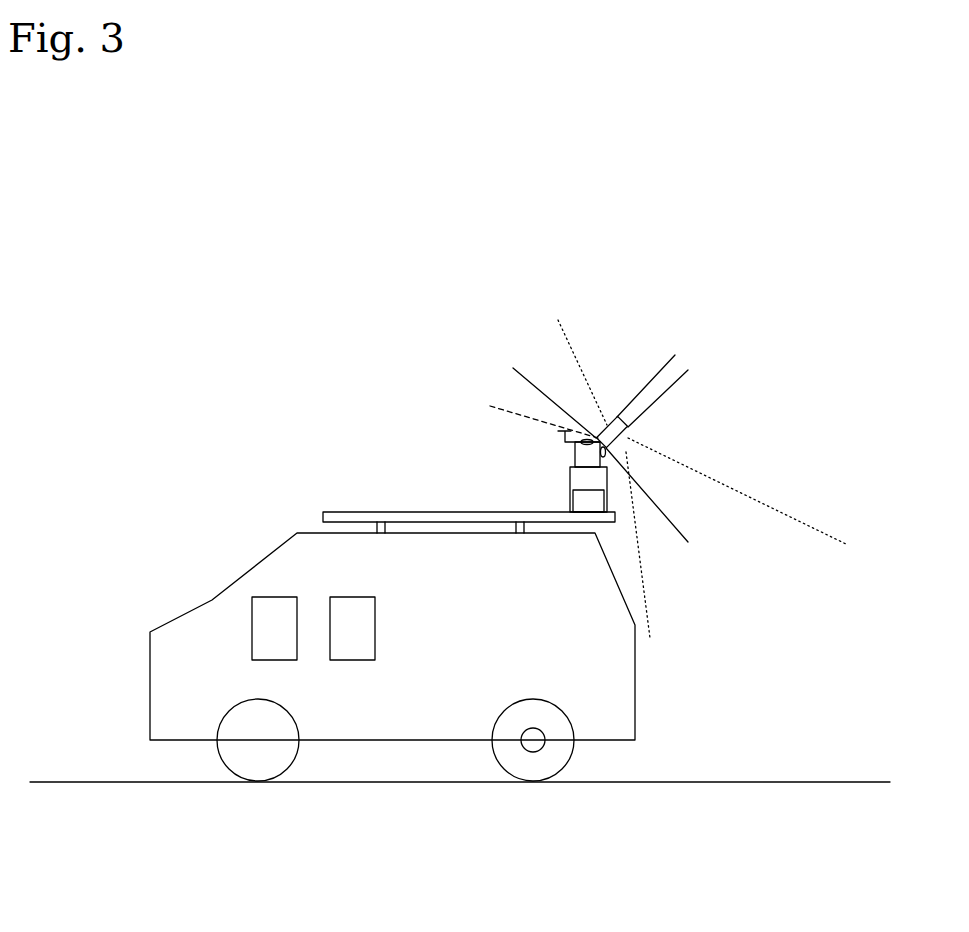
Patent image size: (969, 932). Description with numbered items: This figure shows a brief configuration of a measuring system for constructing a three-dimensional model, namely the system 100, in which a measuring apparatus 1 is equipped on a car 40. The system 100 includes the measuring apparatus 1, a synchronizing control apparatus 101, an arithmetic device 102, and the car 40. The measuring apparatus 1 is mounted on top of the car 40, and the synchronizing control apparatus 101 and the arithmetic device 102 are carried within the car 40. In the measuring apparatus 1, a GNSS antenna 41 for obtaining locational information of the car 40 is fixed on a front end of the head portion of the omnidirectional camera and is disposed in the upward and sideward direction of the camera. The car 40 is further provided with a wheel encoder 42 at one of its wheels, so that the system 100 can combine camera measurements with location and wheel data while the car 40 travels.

The system for constructing a three-dimensional model 100 is at (205, 393).
The car 40 is at (190, 608).
The GNSS antenna 41 is at (562, 431).
The wheel encoder 42 is at (545, 747).
The measuring apparatus 1 is at (546, 472).
The synchronizing control apparatus 101 is at (273, 597).
The arithmetic device 102 is at (345, 597).